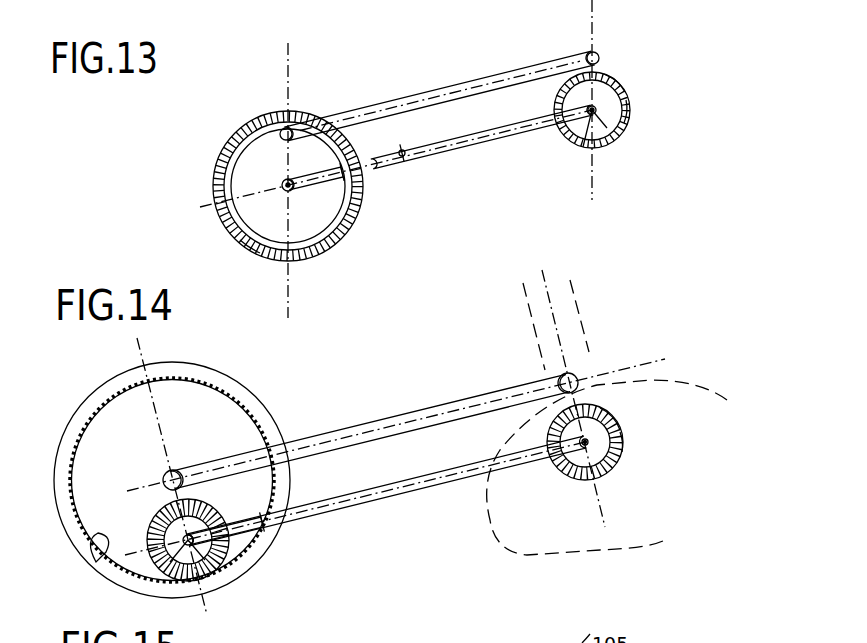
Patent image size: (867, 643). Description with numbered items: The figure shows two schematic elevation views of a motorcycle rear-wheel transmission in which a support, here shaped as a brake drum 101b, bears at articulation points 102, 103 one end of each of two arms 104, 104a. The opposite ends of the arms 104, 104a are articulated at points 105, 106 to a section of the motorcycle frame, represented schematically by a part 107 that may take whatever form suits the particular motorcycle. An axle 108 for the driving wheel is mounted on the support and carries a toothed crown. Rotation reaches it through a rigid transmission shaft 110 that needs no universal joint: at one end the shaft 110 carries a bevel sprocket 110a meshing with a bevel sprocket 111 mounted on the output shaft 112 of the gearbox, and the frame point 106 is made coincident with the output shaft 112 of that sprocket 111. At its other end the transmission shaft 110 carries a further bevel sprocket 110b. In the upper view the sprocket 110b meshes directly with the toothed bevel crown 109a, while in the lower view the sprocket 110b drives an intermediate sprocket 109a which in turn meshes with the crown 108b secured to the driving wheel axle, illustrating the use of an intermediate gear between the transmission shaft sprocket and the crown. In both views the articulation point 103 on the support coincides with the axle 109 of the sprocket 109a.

In FIG. 13, the brake drum 101b is at (240, 148).
In FIG. 13, the articulation point 102 is at (282, 130).
In FIG. 14, the articulation point 102 is at (182, 472).
In FIG. 13, the articulation point 103 is at (332, 247).
In FIG. 14, the articulation point 103 is at (200, 588).
In FIG. 13, the arm 104 is at (428, 90).
In FIG. 14, the arm 104 is at (390, 421).
In FIG. 13, the arm 104a is at (456, 143).
In FIG. 14, the arm 104a is at (320, 512).
In FIG. 13, the frame articulation point 105 is at (598, 52).
In FIG. 14, the frame articulation point 105 is at (576, 378).
In FIG. 13, the frame articulation point 106 is at (612, 146).
In FIG. 14, the frame articulation point 106 is at (598, 470).
In FIG. 13, the frame part 107 is at (598, 53).
In FIG. 14, the frame part 107 is at (553, 313).
In FIG. 13, the axle 108 is at (291, 190).
In FIG. 14, the axle 108 is at (174, 474).
In FIG. 14, the crown 108b is at (96, 562).
In FIG. 13, the axle 109 is at (282, 189).
In FIG. 14, the axle 109 is at (216, 573).
In FIG. 13, the sprocket 109a is at (286, 252).
In FIG. 14, the sprocket 109a is at (158, 570).
In FIG. 13, the transmission shaft 110 is at (397, 164).
In FIG. 14, the transmission shaft 110 is at (265, 532).
In FIG. 13, the bevel sprocket 110a is at (628, 99).
In FIG. 14, the bevel sprocket 110a is at (622, 436).
In FIG. 13, the bevel sprocket 110b is at (398, 152).
In FIG. 14, the bevel sprocket 110b is at (267, 512).
In FIG. 13, the bevel sprocket 111 is at (623, 85).
In FIG. 14, the bevel sprocket 111 is at (603, 408).
In FIG. 13, the output shaft 112 is at (589, 114).
In FIG. 14, the output shaft 112 is at (584, 446).